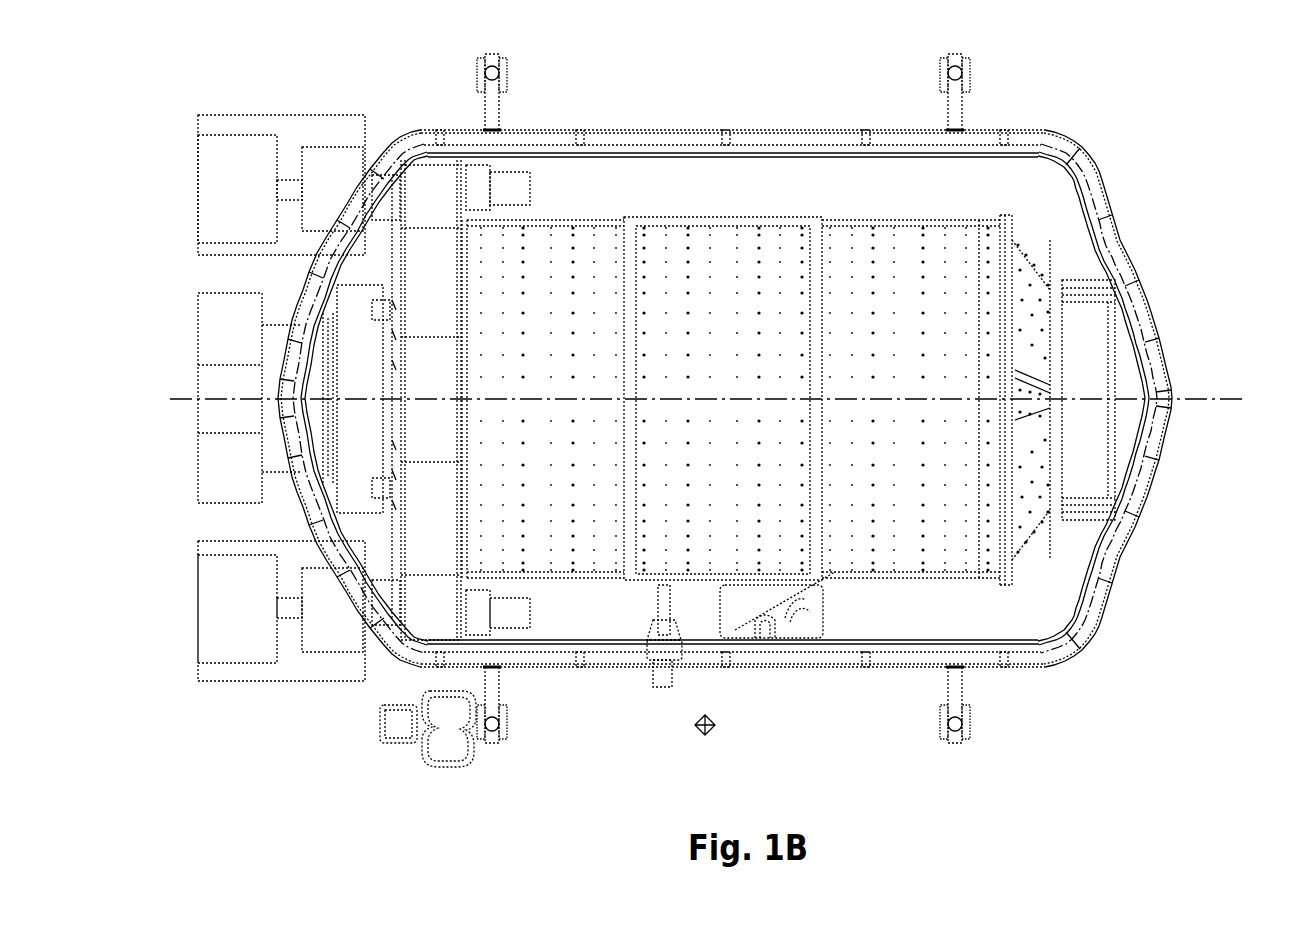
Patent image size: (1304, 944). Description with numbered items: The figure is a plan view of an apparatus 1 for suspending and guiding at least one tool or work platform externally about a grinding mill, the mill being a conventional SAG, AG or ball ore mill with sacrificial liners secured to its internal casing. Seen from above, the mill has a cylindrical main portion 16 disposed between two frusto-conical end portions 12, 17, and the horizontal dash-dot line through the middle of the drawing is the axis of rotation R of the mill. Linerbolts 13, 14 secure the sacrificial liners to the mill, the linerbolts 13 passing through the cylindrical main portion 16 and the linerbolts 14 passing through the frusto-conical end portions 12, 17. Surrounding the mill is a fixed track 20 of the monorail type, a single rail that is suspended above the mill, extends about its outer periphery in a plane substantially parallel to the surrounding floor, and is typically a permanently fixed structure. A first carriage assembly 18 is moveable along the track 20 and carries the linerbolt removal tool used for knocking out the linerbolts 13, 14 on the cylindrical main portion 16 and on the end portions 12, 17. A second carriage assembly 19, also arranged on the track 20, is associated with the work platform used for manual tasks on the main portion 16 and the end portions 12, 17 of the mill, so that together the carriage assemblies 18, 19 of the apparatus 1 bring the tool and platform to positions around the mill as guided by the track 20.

The apparatus 1 is at (1130, 148).
The frusto-conical end portion 12 is at (1033, 282).
The linerbolts 13 is at (523, 252).
The linerbolts 14 is at (1047, 327).
The cylindrical main portion 16 is at (900, 242).
The frusto-conical end portion 17 is at (400, 298).
The first carriage assembly 18 is at (625, 702).
The second carriage assembly 19 is at (827, 607).
The fixed track 20 is at (1102, 563).
The axis of rotation R is at (1215, 398).